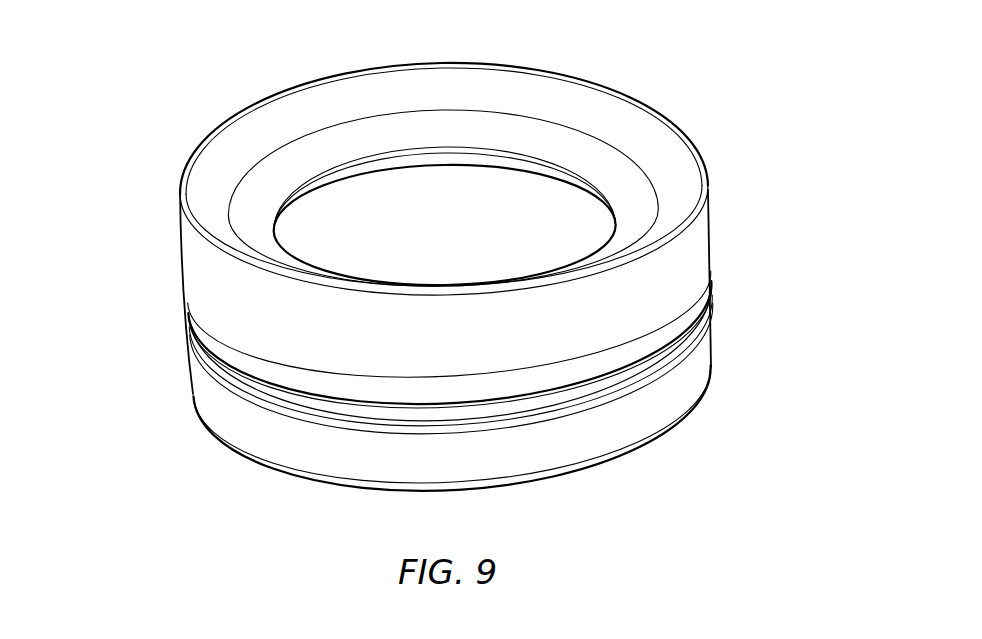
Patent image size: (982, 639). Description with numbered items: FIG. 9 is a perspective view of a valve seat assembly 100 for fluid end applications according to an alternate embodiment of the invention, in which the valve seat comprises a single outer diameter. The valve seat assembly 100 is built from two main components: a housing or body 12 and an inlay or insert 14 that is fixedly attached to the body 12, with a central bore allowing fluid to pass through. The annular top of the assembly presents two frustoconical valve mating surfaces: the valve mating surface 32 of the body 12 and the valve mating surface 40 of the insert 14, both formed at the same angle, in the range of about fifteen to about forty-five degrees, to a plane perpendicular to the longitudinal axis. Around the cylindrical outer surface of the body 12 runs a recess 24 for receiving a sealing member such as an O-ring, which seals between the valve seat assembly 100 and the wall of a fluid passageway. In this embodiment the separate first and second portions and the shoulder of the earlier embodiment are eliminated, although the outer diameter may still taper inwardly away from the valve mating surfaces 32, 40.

The valve seat assembly 100 is at (134, 74).
The body 12 is at (738, 204).
The insert 14 is at (612, 163).
The recess 24 is at (711, 325).
The valve mating surface 32 is at (602, 116).
The valve mating surface 40 is at (540, 140).